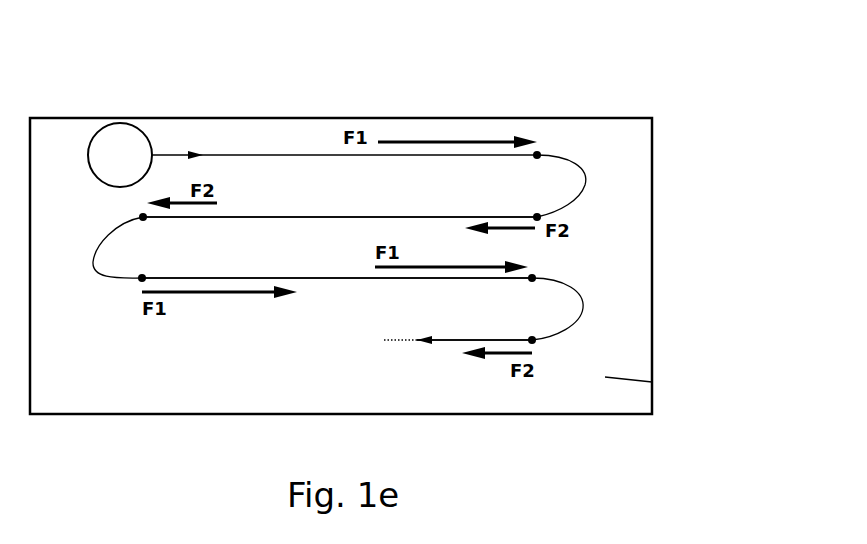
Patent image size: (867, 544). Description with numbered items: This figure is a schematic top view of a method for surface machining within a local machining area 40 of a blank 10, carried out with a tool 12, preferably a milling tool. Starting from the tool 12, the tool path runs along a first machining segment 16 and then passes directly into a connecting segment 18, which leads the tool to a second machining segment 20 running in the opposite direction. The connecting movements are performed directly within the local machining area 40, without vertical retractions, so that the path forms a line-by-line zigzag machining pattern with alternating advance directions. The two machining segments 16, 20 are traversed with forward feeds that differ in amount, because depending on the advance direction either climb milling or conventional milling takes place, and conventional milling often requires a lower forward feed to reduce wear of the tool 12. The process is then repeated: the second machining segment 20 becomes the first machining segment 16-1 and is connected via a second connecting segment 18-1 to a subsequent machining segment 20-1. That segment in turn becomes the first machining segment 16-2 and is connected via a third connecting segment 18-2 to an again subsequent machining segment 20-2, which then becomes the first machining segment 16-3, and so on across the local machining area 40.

The microfluidic device 10 is at (605, 377).
The tool 12 is at (118, 153).
The first machining segment 16 is at (346, 143).
The first machining segment 16-1 is at (338, 205).
The first machining segment 16-2 is at (339, 267).
The first machining segment 16-3 is at (457, 326).
The connecting segment 18 is at (580, 186).
The second connecting segment 18-1 is at (92, 247).
The third connecting segment 18-2 is at (585, 309).
The second machining segment 20 is at (342, 205).
The subsequent machining segment 20-1 is at (335, 267).
The again subsequent machining segment 20-2 is at (449, 328).
The local machining area 40 is at (88, 383).